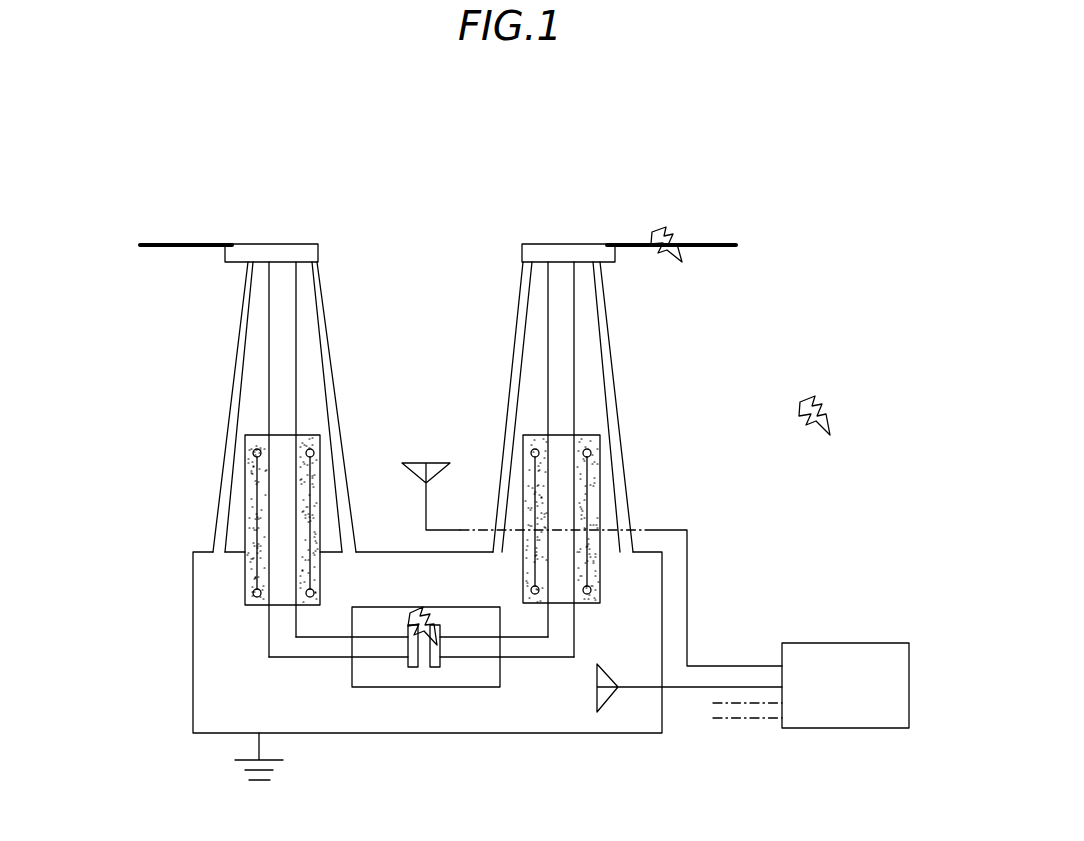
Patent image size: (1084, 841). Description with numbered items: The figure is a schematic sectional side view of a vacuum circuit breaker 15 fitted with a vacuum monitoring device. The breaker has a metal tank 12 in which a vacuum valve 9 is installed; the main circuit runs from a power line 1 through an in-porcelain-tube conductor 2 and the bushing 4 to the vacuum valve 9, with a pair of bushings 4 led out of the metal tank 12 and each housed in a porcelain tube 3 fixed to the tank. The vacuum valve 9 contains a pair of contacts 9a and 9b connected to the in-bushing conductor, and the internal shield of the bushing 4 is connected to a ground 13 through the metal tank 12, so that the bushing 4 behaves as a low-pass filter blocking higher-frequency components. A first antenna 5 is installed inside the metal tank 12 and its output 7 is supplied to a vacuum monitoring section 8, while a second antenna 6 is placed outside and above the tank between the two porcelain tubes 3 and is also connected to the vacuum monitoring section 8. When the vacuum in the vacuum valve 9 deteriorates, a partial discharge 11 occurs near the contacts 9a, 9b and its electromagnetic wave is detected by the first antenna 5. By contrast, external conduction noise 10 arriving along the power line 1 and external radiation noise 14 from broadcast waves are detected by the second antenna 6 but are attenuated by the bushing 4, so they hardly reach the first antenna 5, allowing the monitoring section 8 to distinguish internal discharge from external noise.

The power line 1 is at (715, 247).
The in-porcelain-tube conductor 2 is at (560, 298).
The porcelain tube 3 is at (228, 412).
The bushing 4 is at (600, 512).
The first antenna (in-tank antenna) 5 is at (596, 700).
The second antenna (out-tank antenna) 6 is at (435, 463).
The output of the first antenna 7 is at (741, 697).
The vacuum monitoring section 8 is at (820, 643).
The vacuum valve (vacuum interrupter) 9 is at (430, 687).
The contact 9a is at (387, 652).
The contact 9b is at (461, 651).
The external conduction noise 10 is at (665, 237).
The partial discharge 11 is at (430, 613).
The metal tank 12 is at (193, 640).
The ground 13 is at (238, 768).
The external radiation noise 14 is at (808, 423).
The vacuum circuit breaker 15 is at (177, 713).